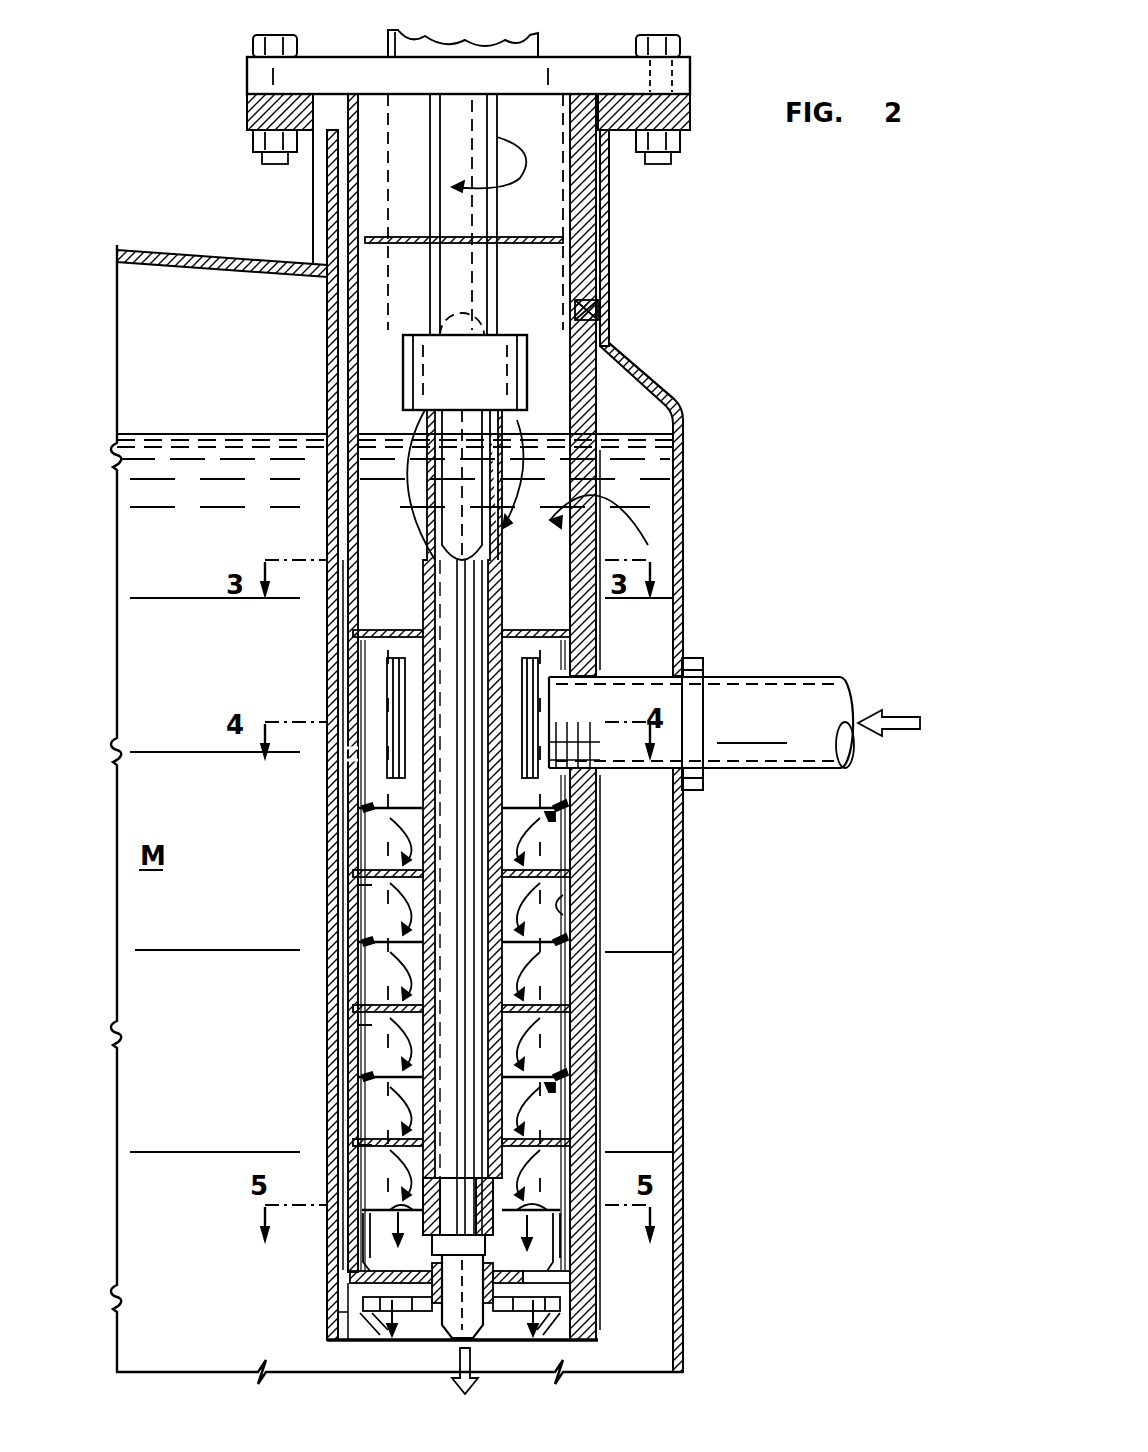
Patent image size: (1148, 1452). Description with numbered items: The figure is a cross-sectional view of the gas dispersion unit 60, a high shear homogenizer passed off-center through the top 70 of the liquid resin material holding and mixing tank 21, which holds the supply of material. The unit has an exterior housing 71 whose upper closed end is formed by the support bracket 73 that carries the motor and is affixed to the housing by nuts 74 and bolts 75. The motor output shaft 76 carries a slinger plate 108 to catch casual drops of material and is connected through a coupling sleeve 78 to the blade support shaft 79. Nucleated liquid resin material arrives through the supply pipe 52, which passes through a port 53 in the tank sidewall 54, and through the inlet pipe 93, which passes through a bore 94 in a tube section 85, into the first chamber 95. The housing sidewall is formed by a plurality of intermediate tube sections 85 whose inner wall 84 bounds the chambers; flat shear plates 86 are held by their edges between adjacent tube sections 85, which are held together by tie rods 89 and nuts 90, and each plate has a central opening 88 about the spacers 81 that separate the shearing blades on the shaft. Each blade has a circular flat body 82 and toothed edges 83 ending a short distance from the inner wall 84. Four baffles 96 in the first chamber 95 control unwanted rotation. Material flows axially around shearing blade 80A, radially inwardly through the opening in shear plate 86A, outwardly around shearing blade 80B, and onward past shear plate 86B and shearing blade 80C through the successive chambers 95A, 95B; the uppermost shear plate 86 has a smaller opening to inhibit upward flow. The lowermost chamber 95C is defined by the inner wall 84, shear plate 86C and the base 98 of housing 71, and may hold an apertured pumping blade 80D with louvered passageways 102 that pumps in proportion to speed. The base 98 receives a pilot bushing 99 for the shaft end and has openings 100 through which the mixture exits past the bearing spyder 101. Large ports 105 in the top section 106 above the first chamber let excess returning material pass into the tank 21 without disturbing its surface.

The liquid resin material holding and mixing tank 21 is at (135, 250).
The top of mixing tank 70 is at (200, 255).
The support bracket 73 is at (655, 75).
The bolts 75 is at (256, 44).
The nuts 74 is at (256, 140).
The output shaft 76 is at (440, 160).
The slinger plate 108 is at (565, 240).
The top section 106 is at (606, 250).
The ports 105 is at (612, 312).
The gas dispersion unit 60 is at (745, 335).
The coupling sleeve 78 is at (505, 358).
The blade support shaft 79 is at (470, 482).
The tank sidewall 54 is at (684, 490).
The shear plates 86 is at (598, 605).
The intermediate tube sections 85 is at (338, 692).
The central opening 88 is at (420, 615).
The spacers 81 is at (596, 990).
The baffles 96 is at (392, 680).
The first chamber 95 is at (372, 757).
The successive chamber 95A is at (378, 885).
The successive chamber 95B is at (380, 1025).
The lowermost chamber 95C is at (380, 1146).
The supply pipe 52 is at (820, 697).
The port 53 is at (700, 768).
The bore 94 is at (607, 678).
The inlet pipe 93 is at (663, 737).
The body 82 is at (568, 806).
The toothed edges 83 is at (557, 816).
The inner wall 84 is at (565, 905).
The shearing blade 80A is at (370, 809).
The shearing blade 80B is at (372, 943).
The shearing blade 80C is at (372, 1078).
The apertured pumping blade 80D is at (548, 1206).
The shear plate 86A is at (597, 875).
The shear plate 86B is at (597, 1009).
The shear plate 86C is at (597, 1142).
The exterior housing 71 is at (604, 1062).
The louvered passageways 102 is at (545, 1250).
The pilot bushing 99 is at (480, 1340).
The base 98 is at (432, 1290).
The openings 100 is at (556, 1300).
The bearing spyder 101 is at (520, 1288).
The tie rods 89 is at (362, 1278).
The nuts 90 is at (332, 1322).